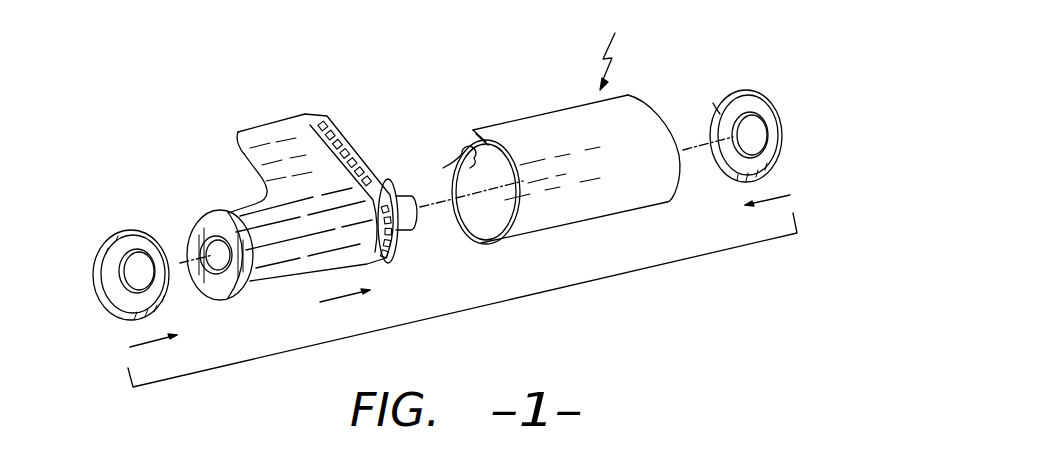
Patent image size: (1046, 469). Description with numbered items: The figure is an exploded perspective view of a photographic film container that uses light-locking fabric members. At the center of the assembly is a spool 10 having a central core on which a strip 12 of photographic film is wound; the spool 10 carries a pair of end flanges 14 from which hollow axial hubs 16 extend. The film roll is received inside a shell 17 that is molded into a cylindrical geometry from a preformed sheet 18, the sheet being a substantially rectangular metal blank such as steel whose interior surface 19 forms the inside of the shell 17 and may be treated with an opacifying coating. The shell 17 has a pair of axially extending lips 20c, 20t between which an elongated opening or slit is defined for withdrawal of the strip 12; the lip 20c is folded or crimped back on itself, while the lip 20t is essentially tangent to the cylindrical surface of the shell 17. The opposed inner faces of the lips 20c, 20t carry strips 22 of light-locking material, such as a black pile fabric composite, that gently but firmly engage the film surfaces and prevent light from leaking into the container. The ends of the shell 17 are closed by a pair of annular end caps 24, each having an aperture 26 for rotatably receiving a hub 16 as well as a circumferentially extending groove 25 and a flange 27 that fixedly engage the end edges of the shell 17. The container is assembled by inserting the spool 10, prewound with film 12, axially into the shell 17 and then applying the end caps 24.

The spool 10 is at (314, 214).
The strip of photographic film 12 is at (288, 126).
The end flange 14 is at (217, 211).
The hollow axial hub 16 is at (258, 260).
The shell 17 is at (617, 47).
The preformed sheet 18 is at (542, 181).
The interior surface 19 is at (478, 213).
The lip 20c is at (472, 140).
The lip 20t is at (510, 130).
The strip of light-locking material 22 is at (453, 167).
The annular end cap 24 is at (439, 186).
The circumferentially extending groove 25 is at (716, 105).
The aperture 26 is at (127, 281).
The flange 27 is at (100, 270).